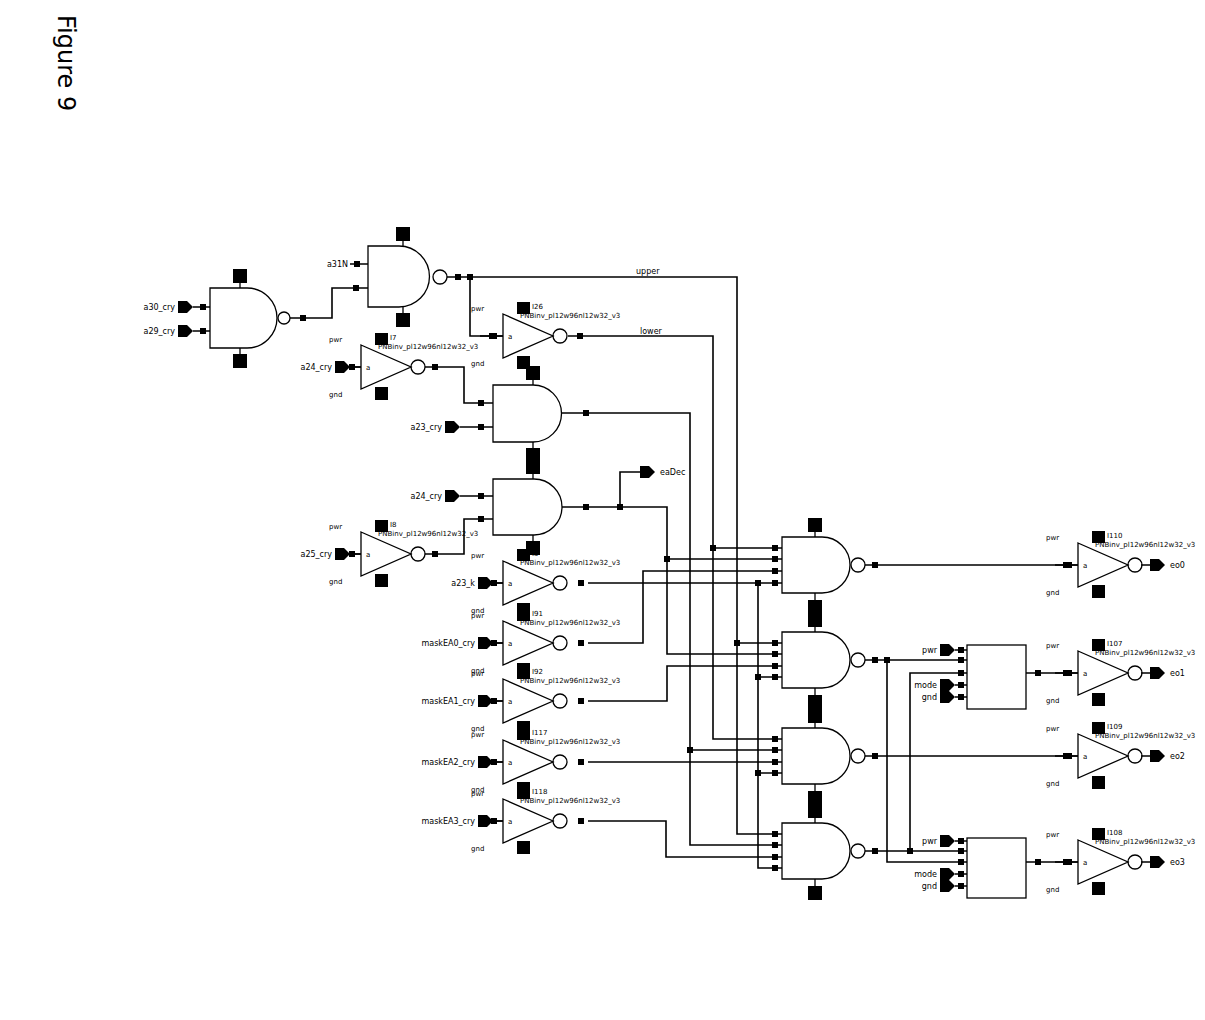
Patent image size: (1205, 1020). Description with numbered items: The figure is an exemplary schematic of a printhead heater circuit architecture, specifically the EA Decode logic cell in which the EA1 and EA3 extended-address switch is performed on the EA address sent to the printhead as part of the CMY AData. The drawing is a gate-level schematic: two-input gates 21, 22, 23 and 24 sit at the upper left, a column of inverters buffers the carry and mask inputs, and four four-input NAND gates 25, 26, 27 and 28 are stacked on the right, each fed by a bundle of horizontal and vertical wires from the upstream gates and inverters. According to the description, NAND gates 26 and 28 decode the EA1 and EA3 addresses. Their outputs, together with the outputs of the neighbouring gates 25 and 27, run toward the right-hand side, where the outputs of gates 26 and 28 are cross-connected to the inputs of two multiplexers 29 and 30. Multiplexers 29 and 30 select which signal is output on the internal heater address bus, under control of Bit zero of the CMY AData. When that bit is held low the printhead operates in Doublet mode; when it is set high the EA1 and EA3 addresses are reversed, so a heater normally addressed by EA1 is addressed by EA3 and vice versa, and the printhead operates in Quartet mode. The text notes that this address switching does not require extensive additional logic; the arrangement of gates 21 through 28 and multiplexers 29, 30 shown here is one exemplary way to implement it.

The NAND gate 21 is at (286, 318).
The NAND gate 22 is at (446, 276).
The AND gate 23 is at (570, 413).
The AND gate 24 is at (570, 507).
The four-input NAND gate 25 is at (859, 565).
The NAND gate 26 is at (859, 660).
The four-input NAND gate 27 is at (859, 756).
The NAND gate 28 is at (859, 851).
The multiplexer 29 is at (1015, 667).
The multiplexer 30 is at (1015, 858).